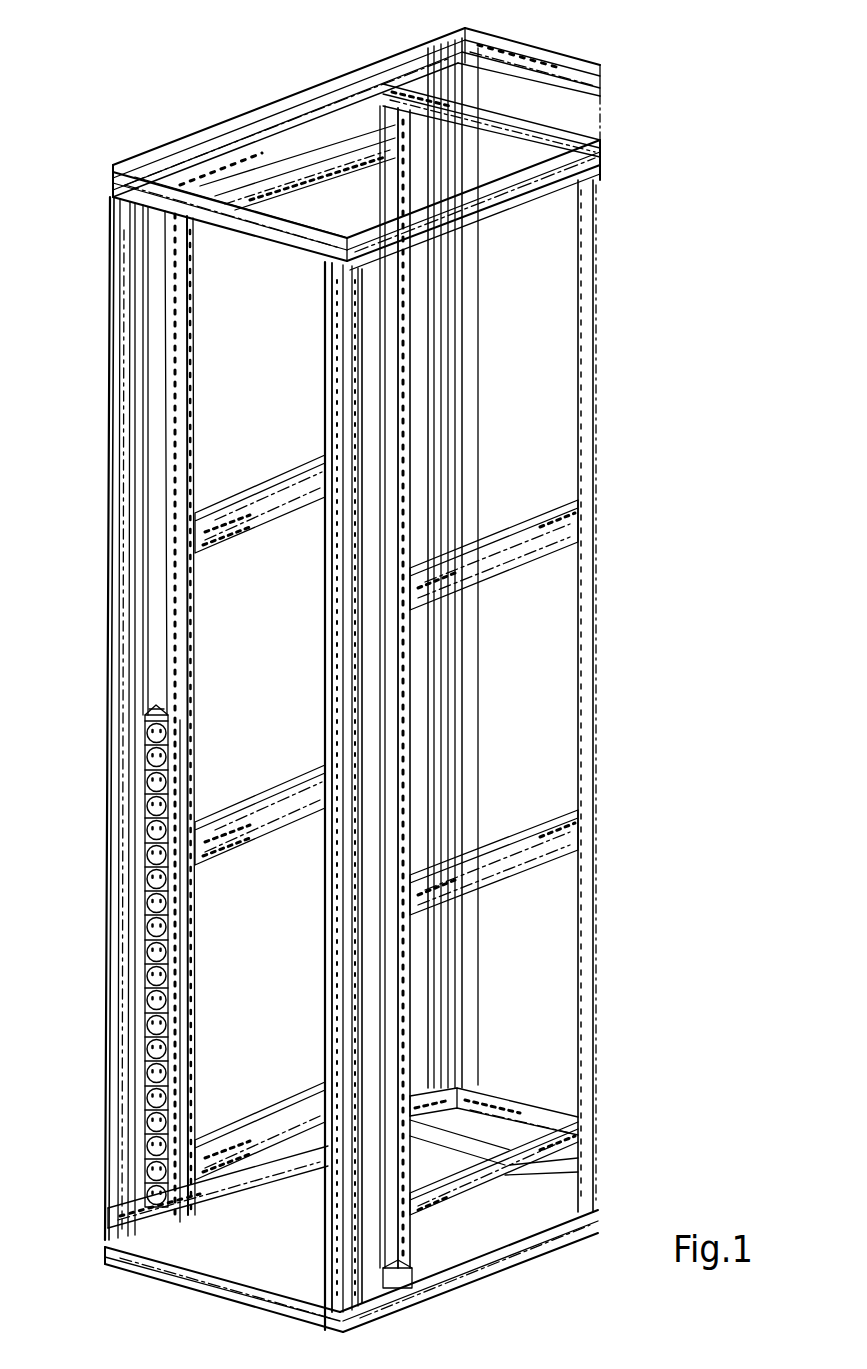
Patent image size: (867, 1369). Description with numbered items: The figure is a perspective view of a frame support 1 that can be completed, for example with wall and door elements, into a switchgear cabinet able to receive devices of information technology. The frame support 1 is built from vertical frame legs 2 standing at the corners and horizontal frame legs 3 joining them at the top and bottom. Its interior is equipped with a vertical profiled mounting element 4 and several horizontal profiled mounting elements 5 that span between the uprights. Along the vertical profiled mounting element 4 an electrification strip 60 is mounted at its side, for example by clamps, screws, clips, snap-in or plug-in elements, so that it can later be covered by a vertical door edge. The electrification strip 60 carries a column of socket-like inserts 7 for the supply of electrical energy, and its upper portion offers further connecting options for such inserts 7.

The frame support 1 is at (92, 772).
The vertical frame leg 2 is at (125, 572).
The horizontal frame leg 3 is at (183, 148).
The vertical profiled mounting element 4 is at (198, 465).
The horizontal profiled mounting element 5 is at (273, 510).
The electrification strip 60 is at (148, 688).
The socket-like insert 7 is at (145, 735).